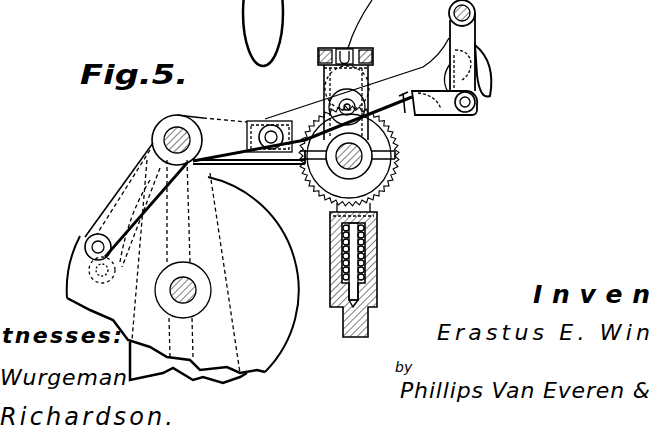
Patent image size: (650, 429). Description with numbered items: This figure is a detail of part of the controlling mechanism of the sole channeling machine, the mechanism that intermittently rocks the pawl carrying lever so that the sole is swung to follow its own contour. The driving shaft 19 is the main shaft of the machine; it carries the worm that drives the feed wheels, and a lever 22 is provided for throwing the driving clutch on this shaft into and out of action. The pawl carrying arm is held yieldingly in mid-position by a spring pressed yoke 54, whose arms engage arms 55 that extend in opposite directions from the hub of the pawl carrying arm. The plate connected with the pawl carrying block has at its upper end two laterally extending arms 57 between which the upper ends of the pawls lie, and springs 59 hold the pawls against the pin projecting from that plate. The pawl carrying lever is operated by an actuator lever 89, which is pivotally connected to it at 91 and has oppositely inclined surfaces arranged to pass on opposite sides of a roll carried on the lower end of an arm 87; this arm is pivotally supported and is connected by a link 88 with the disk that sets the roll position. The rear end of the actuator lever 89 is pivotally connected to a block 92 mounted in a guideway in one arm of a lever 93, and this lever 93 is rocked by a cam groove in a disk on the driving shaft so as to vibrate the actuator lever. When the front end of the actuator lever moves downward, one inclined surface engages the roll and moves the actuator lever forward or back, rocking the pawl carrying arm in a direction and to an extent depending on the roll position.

The driving shaft 19 is at (197, 289).
The lever 22 is at (226, 33).
The spring pressed yoke 54 is at (385, 184).
The arms 55 is at (305, 160).
The laterally extending arms 57 is at (322, 49).
The springs 59 is at (318, 58).
The arm 87 is at (478, 31).
The link 88 is at (446, 116).
The actuator lever 89 is at (404, 110).
The pivotal connection 91 is at (372, 92).
The block 92 is at (263, 120).
The lever 93 is at (221, 127).